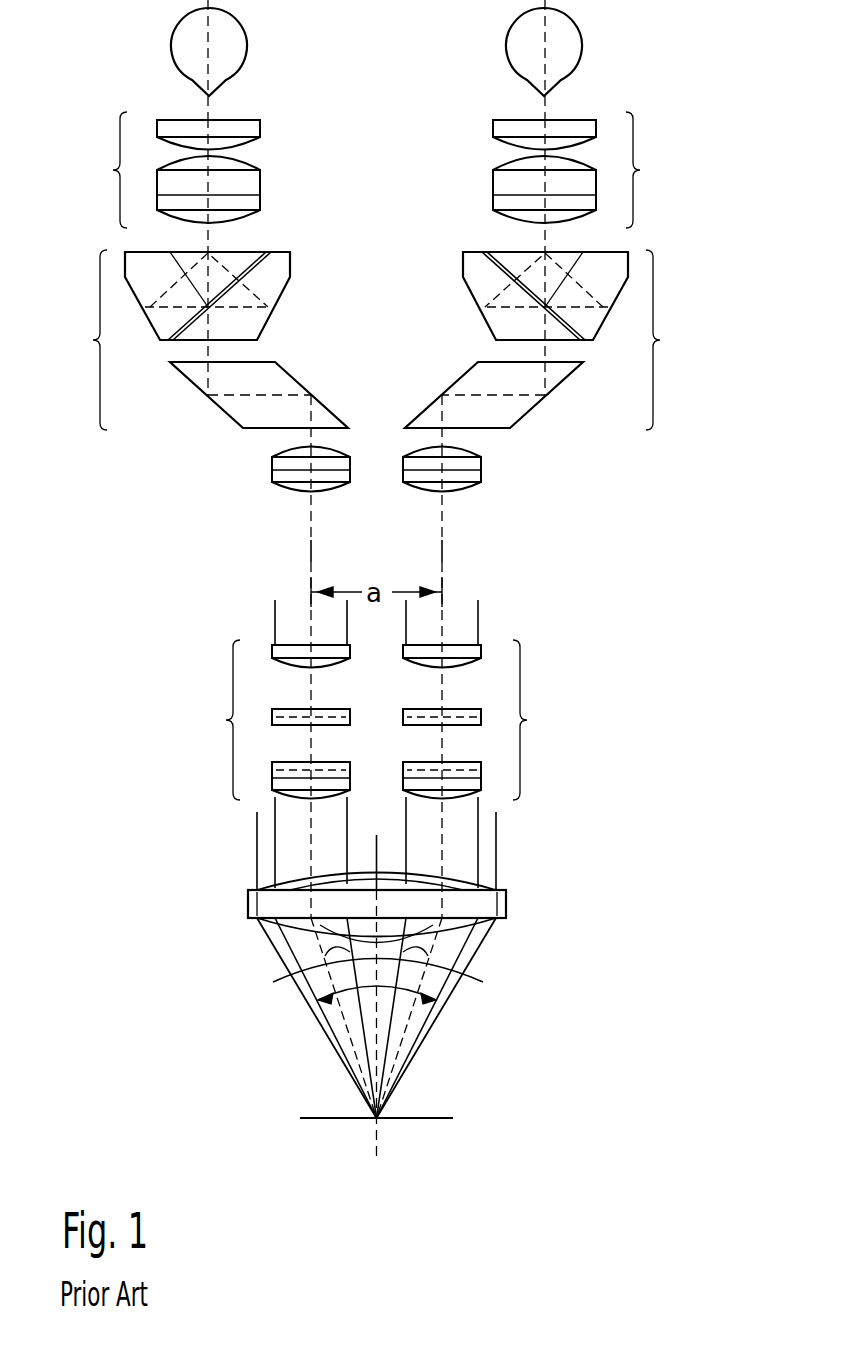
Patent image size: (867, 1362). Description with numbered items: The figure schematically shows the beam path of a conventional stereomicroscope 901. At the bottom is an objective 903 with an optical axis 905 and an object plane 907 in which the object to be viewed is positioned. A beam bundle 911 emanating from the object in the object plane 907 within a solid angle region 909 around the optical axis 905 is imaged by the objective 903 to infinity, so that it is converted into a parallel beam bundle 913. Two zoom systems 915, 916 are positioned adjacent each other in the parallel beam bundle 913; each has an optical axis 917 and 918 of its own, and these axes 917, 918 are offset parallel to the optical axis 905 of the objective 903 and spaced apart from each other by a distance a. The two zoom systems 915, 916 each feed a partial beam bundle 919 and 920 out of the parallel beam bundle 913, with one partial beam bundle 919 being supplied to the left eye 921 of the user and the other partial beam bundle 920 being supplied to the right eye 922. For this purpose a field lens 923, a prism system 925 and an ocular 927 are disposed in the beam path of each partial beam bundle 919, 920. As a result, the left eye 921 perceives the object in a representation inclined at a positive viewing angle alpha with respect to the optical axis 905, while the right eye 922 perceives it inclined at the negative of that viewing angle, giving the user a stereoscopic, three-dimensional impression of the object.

The stereomicroscope 901 is at (682, 483).
The objective 903 is at (430, 908).
The optical axis 905 is at (481, 996).
The object plane 907 is at (420, 1118).
The solid angle region 909 is at (416, 1018).
The beam bundle 911 is at (488, 940).
The parallel beam bundle 913 is at (324, 851).
The zoom system 915 is at (261, 720).
The zoom system 916 is at (494, 720).
The optical axis 917 is at (307, 560).
The optical axis 918 is at (446, 560).
The partial beam bundle 919 is at (258, 742).
The partial beam bundle 920 is at (495, 742).
The left eye 921 is at (157, 59).
The right eye 922 is at (601, 59).
The field lens 923 is at (377, 494).
The prism system 925 is at (376, 348).
The ocular 927 is at (377, 181).